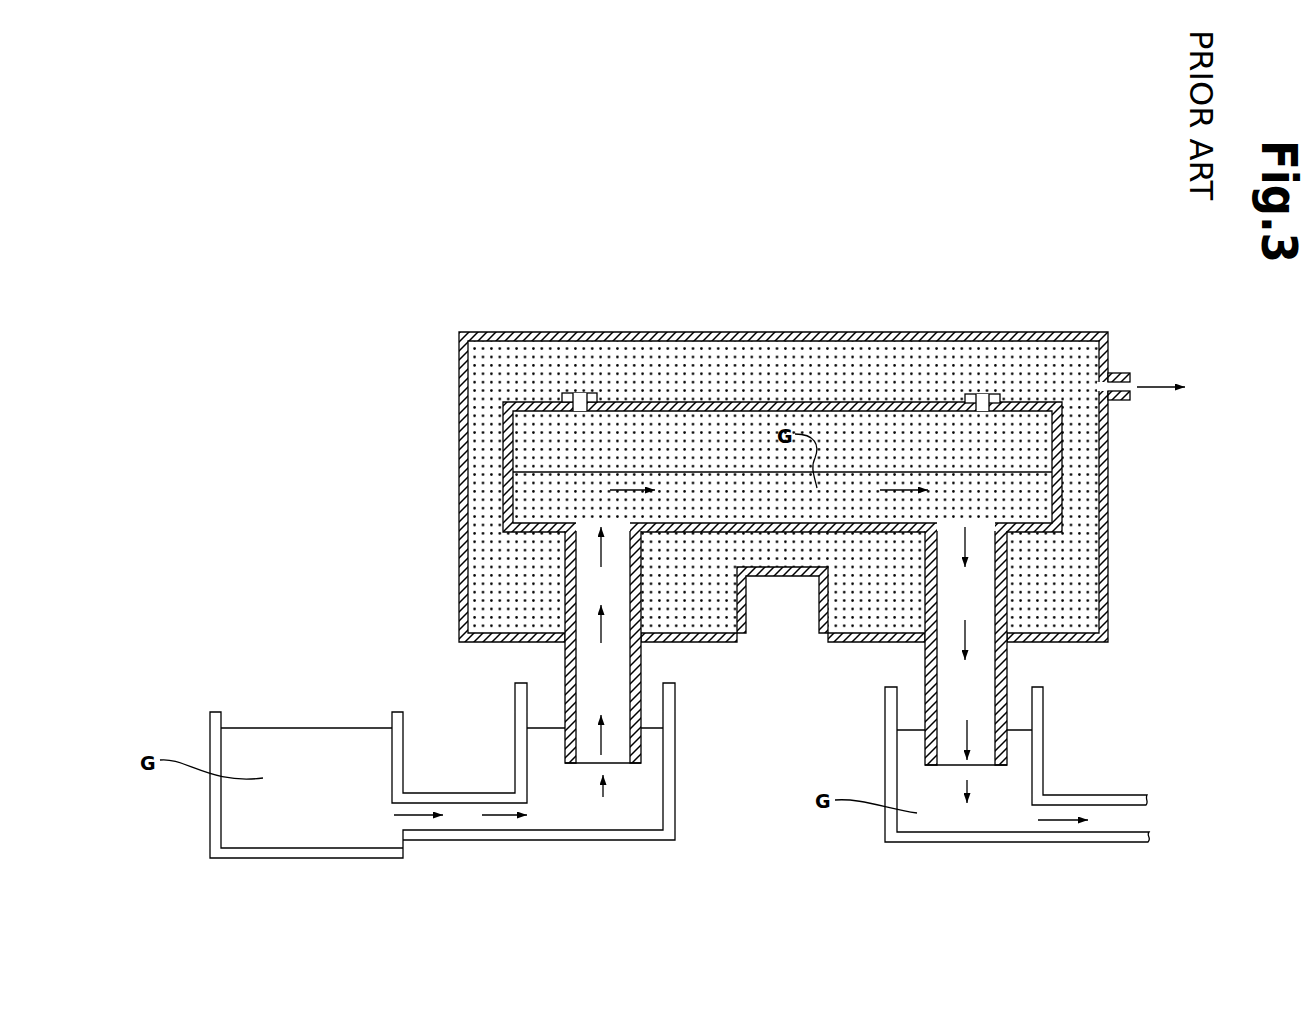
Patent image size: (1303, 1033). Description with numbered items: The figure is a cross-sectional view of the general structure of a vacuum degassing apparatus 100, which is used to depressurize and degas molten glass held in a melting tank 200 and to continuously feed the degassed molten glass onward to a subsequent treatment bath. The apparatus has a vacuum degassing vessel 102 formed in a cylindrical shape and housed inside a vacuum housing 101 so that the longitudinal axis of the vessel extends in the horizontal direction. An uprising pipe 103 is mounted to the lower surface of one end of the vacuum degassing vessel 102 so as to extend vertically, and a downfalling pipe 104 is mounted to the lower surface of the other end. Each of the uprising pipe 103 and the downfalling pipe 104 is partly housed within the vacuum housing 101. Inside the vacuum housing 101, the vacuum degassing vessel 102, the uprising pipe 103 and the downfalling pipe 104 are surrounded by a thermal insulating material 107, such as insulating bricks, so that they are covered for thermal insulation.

The vacuum degassing apparatus 100 is at (829, 501).
The vacuum housing 101 is at (645, 332).
The vacuum degassing vessel 102 is at (703, 403).
The uprising pipe 103 is at (641, 622).
The downfalling pipe 104 is at (1005, 592).
The thermal insulating material 107 is at (816, 375).
The melting tank 200 is at (217, 720).